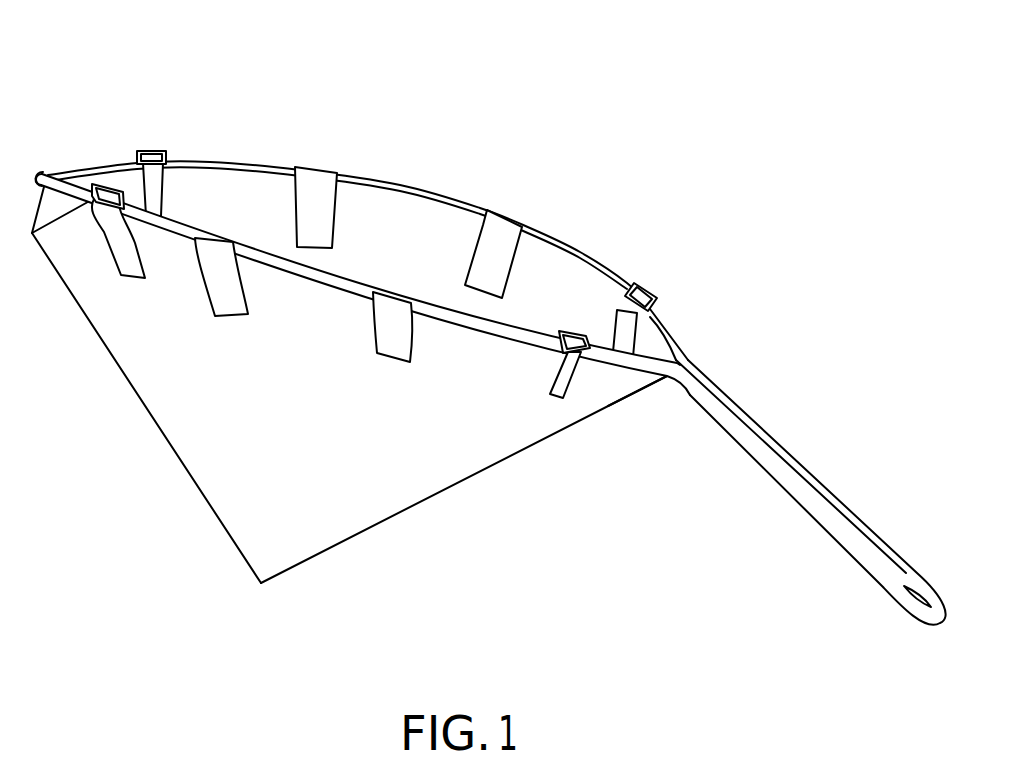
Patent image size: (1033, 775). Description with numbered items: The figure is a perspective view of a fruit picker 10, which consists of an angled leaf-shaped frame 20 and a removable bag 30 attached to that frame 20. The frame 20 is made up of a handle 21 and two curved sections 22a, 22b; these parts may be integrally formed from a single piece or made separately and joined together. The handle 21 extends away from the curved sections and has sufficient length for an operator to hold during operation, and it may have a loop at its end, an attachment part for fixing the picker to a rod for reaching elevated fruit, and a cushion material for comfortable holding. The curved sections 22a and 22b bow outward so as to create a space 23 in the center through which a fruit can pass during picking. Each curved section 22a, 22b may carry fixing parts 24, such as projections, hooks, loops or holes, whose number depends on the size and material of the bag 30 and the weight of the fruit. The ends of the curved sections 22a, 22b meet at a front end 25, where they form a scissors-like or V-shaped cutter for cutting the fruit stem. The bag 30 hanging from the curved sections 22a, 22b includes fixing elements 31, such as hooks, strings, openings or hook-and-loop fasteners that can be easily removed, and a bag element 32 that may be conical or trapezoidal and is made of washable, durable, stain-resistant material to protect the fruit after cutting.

The fruit picker 10 is at (732, 316).
The frame 20 is at (490, 338).
The handle 21 is at (807, 473).
The curved section 22a is at (580, 250).
The curved section 22b is at (303, 283).
The space 23 is at (358, 210).
The fixing parts 24 is at (643, 279).
The front end 25 is at (57, 160).
The bag 30 is at (412, 468).
The fixing elements 31 is at (610, 383).
The bag element 32 is at (507, 452).